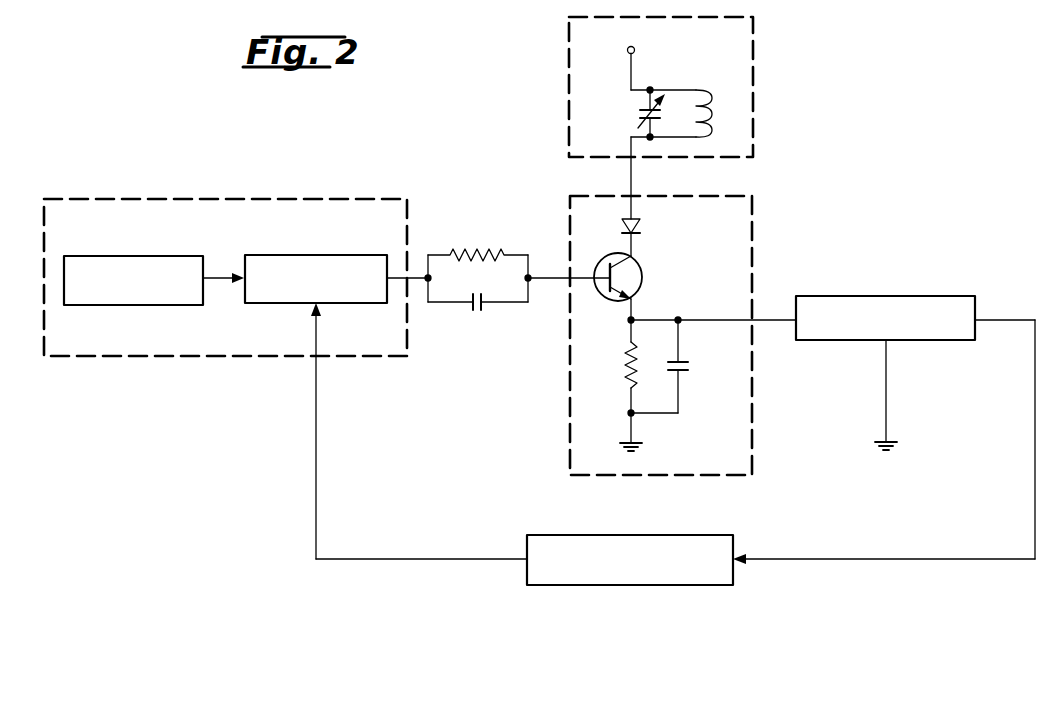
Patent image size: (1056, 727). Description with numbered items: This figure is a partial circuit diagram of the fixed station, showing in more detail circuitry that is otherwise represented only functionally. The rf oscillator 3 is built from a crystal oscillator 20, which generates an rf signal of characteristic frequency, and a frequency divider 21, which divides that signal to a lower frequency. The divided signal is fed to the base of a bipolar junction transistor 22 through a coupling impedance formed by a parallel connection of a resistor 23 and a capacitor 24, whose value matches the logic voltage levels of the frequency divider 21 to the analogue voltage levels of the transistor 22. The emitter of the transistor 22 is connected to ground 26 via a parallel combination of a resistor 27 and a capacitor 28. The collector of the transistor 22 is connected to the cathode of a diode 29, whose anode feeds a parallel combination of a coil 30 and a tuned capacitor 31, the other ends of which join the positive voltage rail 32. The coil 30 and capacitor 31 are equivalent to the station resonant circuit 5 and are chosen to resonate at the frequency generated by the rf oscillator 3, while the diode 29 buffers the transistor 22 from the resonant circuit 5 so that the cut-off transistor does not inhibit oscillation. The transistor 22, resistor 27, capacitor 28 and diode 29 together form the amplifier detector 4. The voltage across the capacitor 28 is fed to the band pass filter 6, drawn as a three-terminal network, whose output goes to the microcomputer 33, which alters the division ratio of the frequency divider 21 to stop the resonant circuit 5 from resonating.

The rf oscillator 3 is at (174, 197).
The amplifier detector 4 is at (757, 232).
The resonant circuit 5 is at (760, 50).
The band pass filter 6 is at (902, 296).
The crystal oscillator 20 is at (136, 256).
The frequency divider 21 is at (320, 255).
The bipolar junction transistor 22 is at (609, 266).
The resistor 23 is at (477, 250).
The capacitor 24 is at (484, 309).
The ground 26 is at (640, 440).
The resistor 27 is at (623, 370).
The capacitor 28 is at (686, 364).
The diode 29 is at (641, 228).
The coil 30 is at (708, 101).
The tuned capacitor 31 is at (645, 112).
The positive voltage rail 32 is at (635, 50).
The microcomputer 33 is at (555, 585).